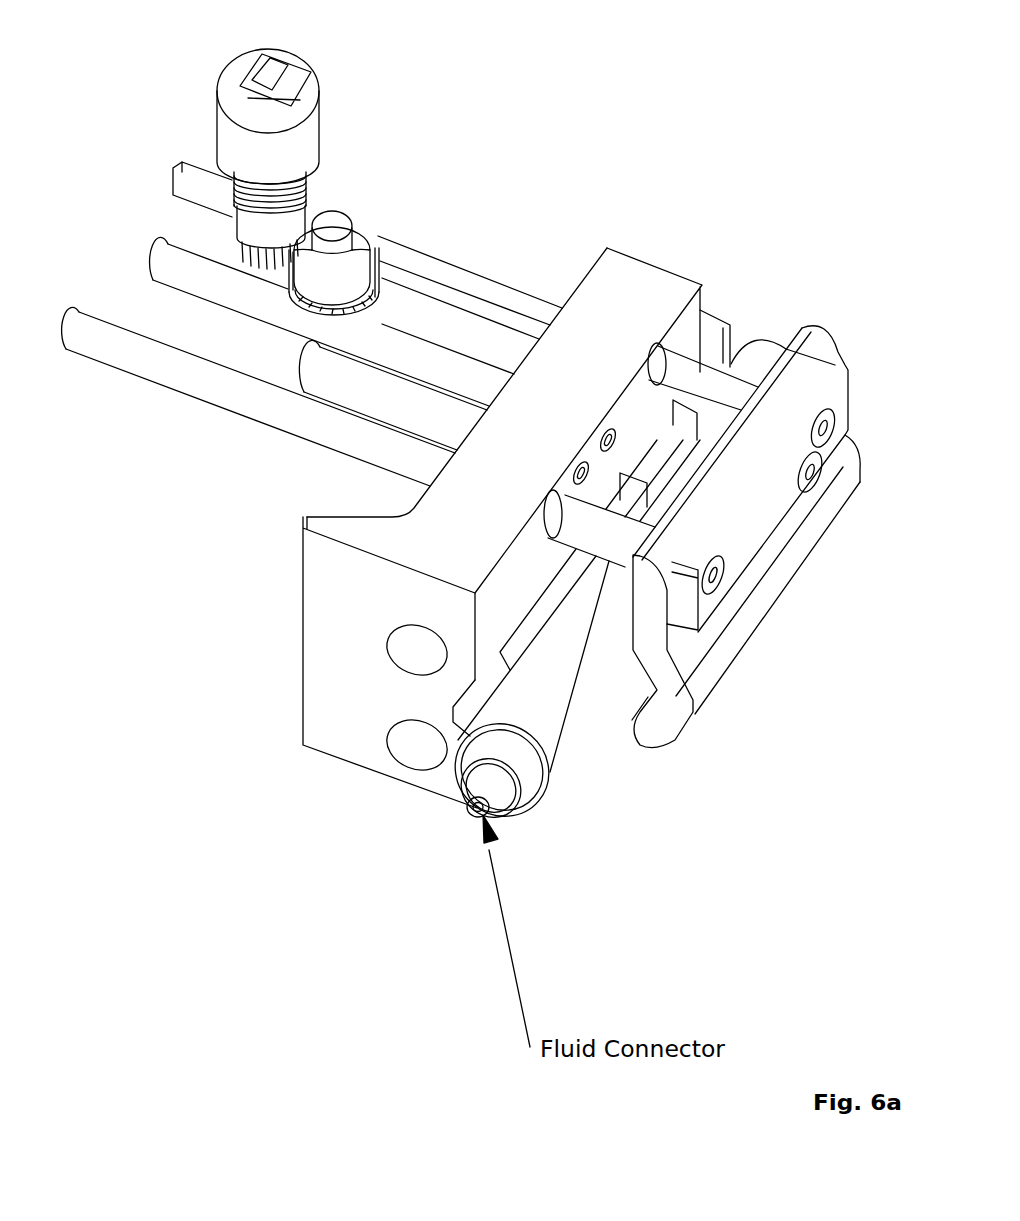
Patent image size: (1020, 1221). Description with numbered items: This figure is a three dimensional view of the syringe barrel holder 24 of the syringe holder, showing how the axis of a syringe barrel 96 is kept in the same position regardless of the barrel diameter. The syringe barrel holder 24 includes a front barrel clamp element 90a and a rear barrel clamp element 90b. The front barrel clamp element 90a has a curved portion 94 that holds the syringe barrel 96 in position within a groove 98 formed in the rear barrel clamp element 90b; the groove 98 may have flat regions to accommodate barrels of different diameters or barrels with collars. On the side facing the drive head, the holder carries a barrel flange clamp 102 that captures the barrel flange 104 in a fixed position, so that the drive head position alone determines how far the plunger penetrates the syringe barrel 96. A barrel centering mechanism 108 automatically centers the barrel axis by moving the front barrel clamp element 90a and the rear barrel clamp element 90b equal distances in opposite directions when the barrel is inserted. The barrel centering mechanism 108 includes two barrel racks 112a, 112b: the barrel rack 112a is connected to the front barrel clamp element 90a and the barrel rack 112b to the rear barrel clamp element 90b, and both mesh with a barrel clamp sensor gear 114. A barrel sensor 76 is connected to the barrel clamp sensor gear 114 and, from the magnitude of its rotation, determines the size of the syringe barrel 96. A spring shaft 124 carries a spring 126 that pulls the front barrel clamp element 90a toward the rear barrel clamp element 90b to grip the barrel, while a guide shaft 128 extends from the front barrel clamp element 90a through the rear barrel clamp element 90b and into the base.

The syringe barrel holder 24 is at (834, 500).
The barrel sensor 76 is at (237, 150).
The front barrel clamp element 90a is at (700, 683).
The rear barrel clamp element 90b is at (490, 538).
The curved portion 94 is at (670, 708).
The syringe barrel 96 is at (560, 720).
The groove 98 is at (477, 718).
The barrel flange clamp 102 is at (713, 333).
The barrel flange 104 is at (757, 338).
The barrel centering mechanism 108 is at (400, 605).
The barrel rack 112a is at (416, 262).
The barrel rack 112b is at (410, 357).
The barrel clamp sensor gear 114 is at (364, 233).
The spring shaft 124 is at (333, 380).
The spring 126 is at (373, 395).
The guide shaft 128 is at (133, 358).